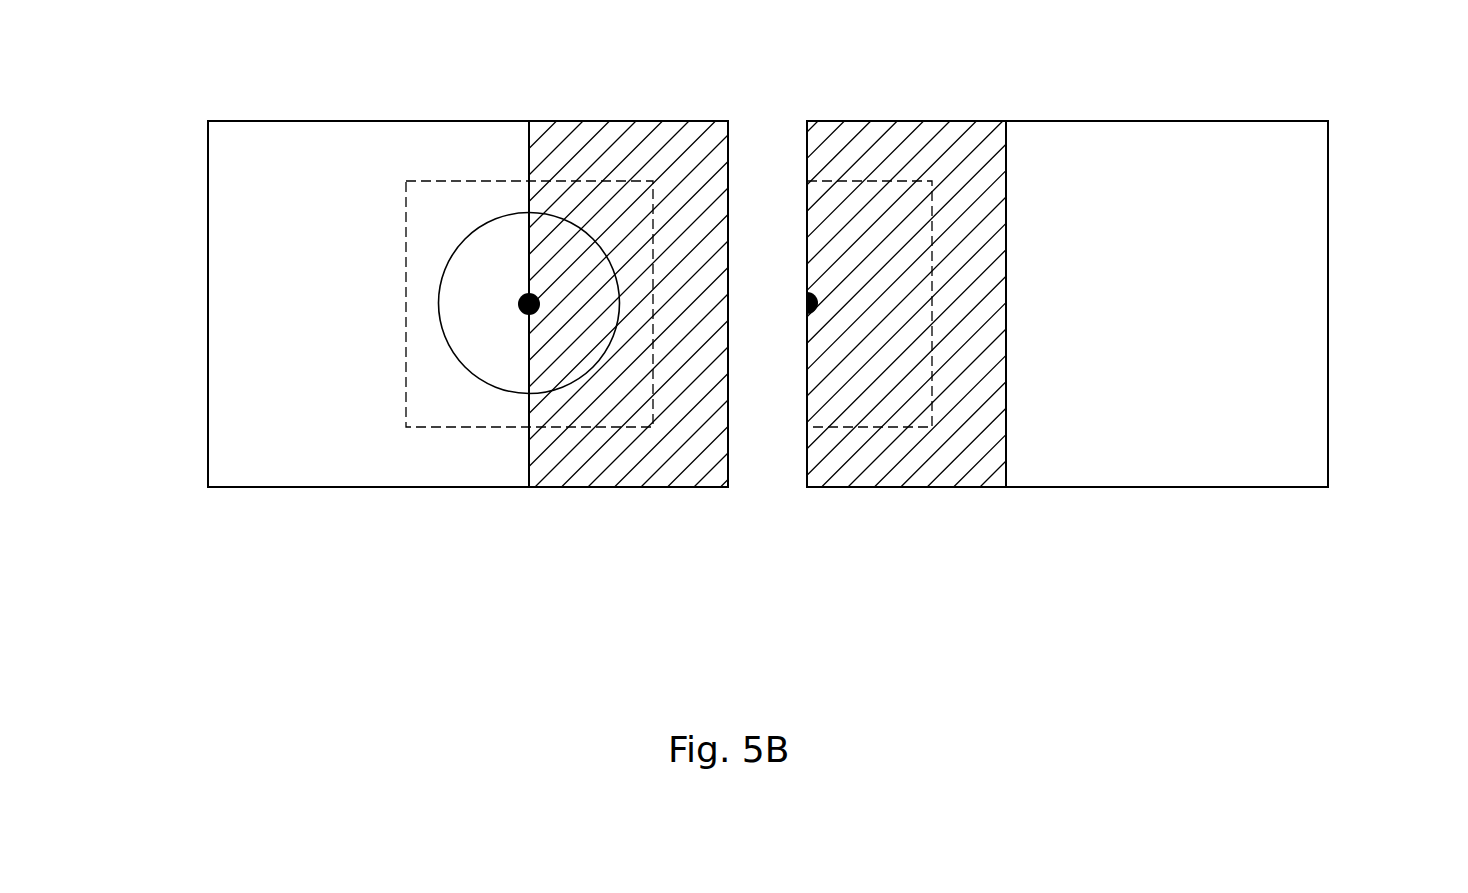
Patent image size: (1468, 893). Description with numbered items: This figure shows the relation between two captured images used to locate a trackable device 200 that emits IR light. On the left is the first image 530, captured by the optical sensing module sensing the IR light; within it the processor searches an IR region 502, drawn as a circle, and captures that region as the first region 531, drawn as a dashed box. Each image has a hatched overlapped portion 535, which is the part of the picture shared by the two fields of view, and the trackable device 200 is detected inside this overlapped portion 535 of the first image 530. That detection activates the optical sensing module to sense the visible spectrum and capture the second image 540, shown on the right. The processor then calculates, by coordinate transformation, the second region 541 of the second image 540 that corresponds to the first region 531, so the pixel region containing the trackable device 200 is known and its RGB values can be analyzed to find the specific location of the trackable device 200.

The trackable device 200 is at (532, 298).
The IR region 502 is at (438, 303).
The first image 530 is at (208, 148).
The first region 531 is at (406, 204).
The overlapped portion 535 is at (638, 487).
The second image 540 is at (1328, 148).
The second region 541 is at (809, 293).